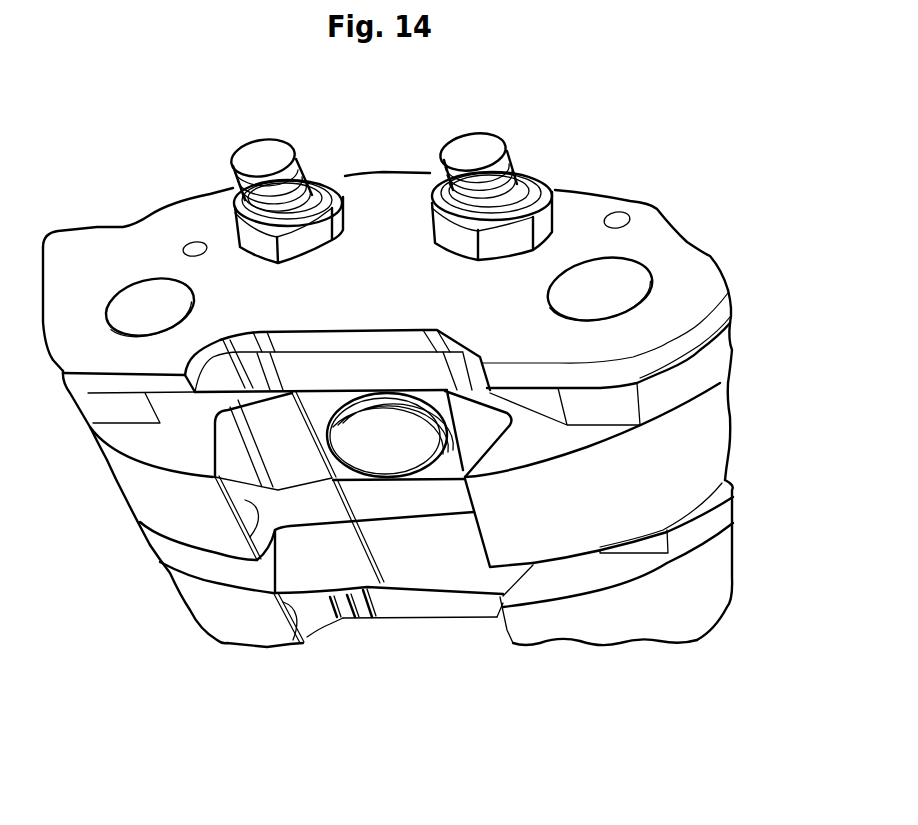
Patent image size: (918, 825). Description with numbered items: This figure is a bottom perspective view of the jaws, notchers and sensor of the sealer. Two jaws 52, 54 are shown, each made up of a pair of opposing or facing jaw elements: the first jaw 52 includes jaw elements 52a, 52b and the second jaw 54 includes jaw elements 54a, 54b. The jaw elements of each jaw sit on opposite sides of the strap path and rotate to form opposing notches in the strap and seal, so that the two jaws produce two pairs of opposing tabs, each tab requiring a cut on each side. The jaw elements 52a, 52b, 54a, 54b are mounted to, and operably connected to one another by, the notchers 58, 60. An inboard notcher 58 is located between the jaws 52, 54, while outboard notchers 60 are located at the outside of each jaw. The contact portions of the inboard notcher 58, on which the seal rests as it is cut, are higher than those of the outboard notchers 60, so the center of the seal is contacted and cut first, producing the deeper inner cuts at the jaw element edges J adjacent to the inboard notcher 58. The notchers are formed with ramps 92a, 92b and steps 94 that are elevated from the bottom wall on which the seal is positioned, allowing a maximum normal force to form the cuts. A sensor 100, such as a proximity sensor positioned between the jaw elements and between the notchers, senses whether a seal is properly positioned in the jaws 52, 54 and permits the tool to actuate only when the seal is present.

The jaw 52 is at (755, 377).
The jaw element 52a is at (158, 522).
The jaw element 52b is at (710, 443).
The jaw 54 is at (752, 565).
The jaw element 54a is at (210, 623).
The jaw element 54b is at (710, 607).
The inboard notcher 58 is at (430, 497).
The outboard notcher 60 is at (435, 369).
The ramp 92a is at (263, 370).
The ramp 92b is at (262, 363).
The step 94 is at (250, 381).
The sensor 100 is at (383, 442).
The jaw element edge J is at (247, 540).